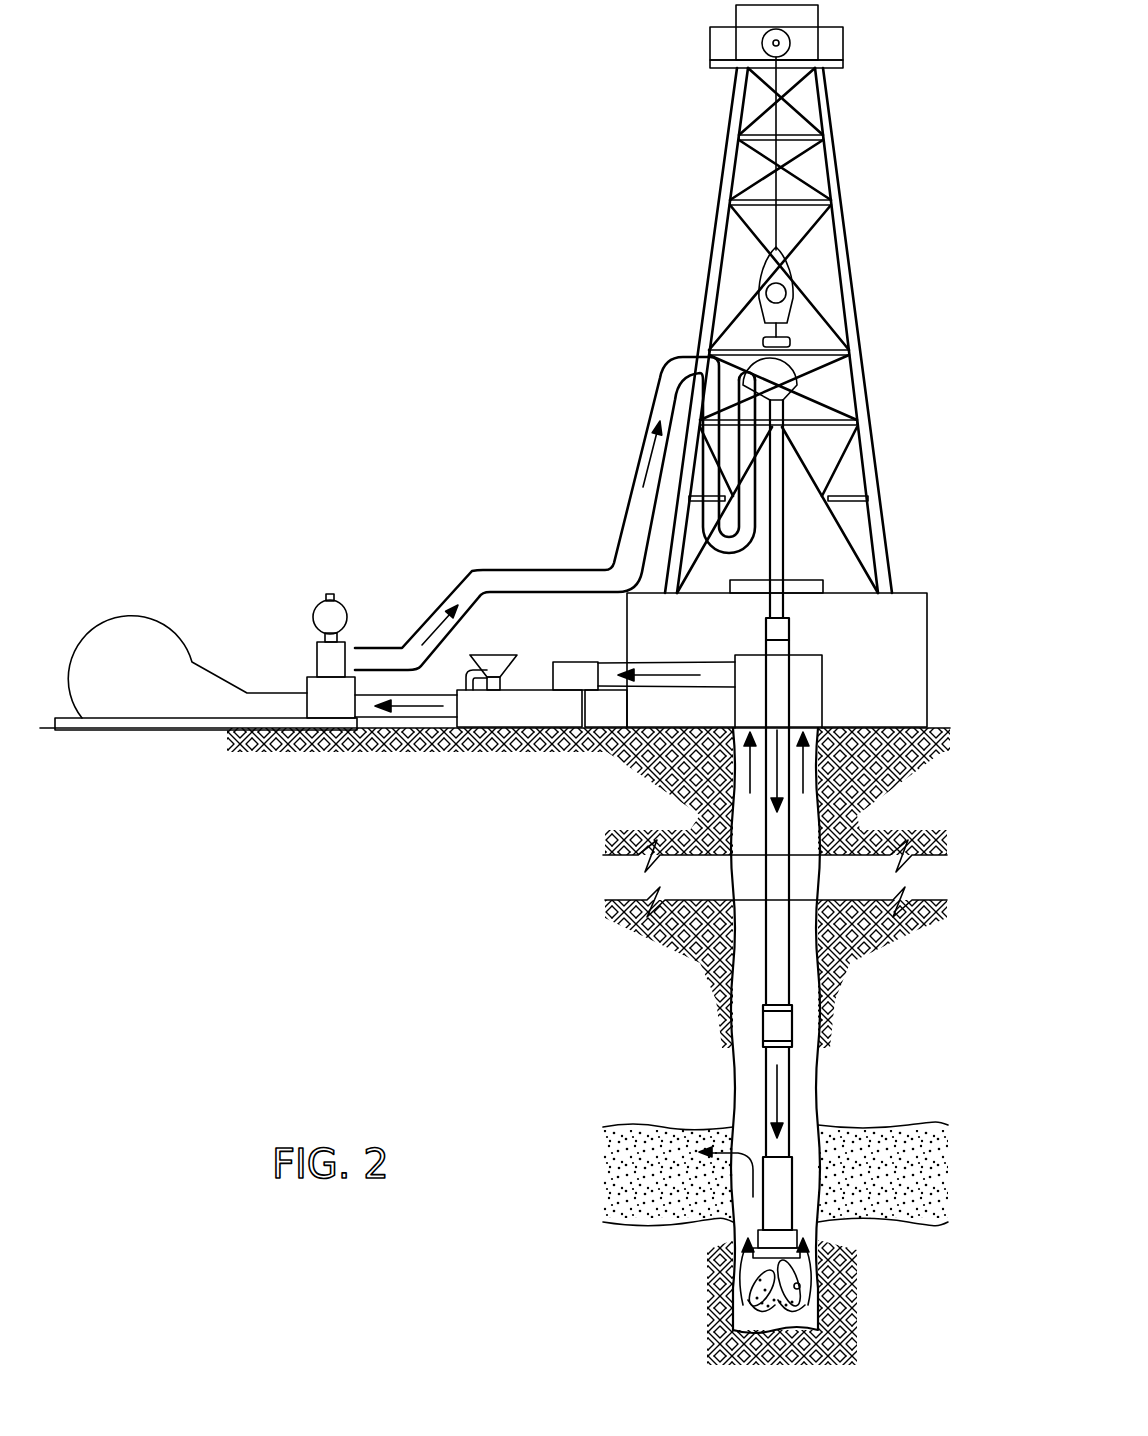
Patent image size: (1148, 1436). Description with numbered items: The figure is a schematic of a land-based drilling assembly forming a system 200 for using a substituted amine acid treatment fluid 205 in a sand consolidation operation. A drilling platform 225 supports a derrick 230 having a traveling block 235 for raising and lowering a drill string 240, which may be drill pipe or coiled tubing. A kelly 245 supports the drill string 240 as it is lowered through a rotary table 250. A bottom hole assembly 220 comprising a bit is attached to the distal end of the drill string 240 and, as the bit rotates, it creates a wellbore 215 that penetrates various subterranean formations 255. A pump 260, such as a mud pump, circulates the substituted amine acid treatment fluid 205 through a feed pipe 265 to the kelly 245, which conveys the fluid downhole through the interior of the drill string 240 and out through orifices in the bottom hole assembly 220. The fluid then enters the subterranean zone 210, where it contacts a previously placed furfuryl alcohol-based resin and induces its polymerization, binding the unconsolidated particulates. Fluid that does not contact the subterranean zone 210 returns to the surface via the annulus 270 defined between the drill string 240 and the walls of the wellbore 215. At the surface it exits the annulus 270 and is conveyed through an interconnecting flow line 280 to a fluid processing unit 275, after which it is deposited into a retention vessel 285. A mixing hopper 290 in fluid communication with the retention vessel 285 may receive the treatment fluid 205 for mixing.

The system 200 is at (347, 237).
The substituted amine acid treatment fluid 205 is at (432, 625).
The subterranean zone 210 is at (670, 1183).
The wellbore 215 is at (817, 1050).
The bottom hole assembly 220 is at (805, 1273).
The drilling platform 225 is at (900, 676).
The derrick 230 is at (848, 330).
The traveling block 235 is at (792, 284).
The drill string 240 is at (789, 957).
The kelly 245 is at (776, 558).
The rotary table 250 is at (815, 588).
The subterranean formations 255 is at (627, 998).
The pump 260 is at (130, 613).
The feed pipe 265 is at (548, 570).
The annulus 270 is at (817, 1095).
The fluid processing unit 275 is at (580, 662).
The interconnecting flow line 280 is at (725, 658).
The retention vessel 285 is at (512, 727).
The mixing hopper 290 is at (498, 655).